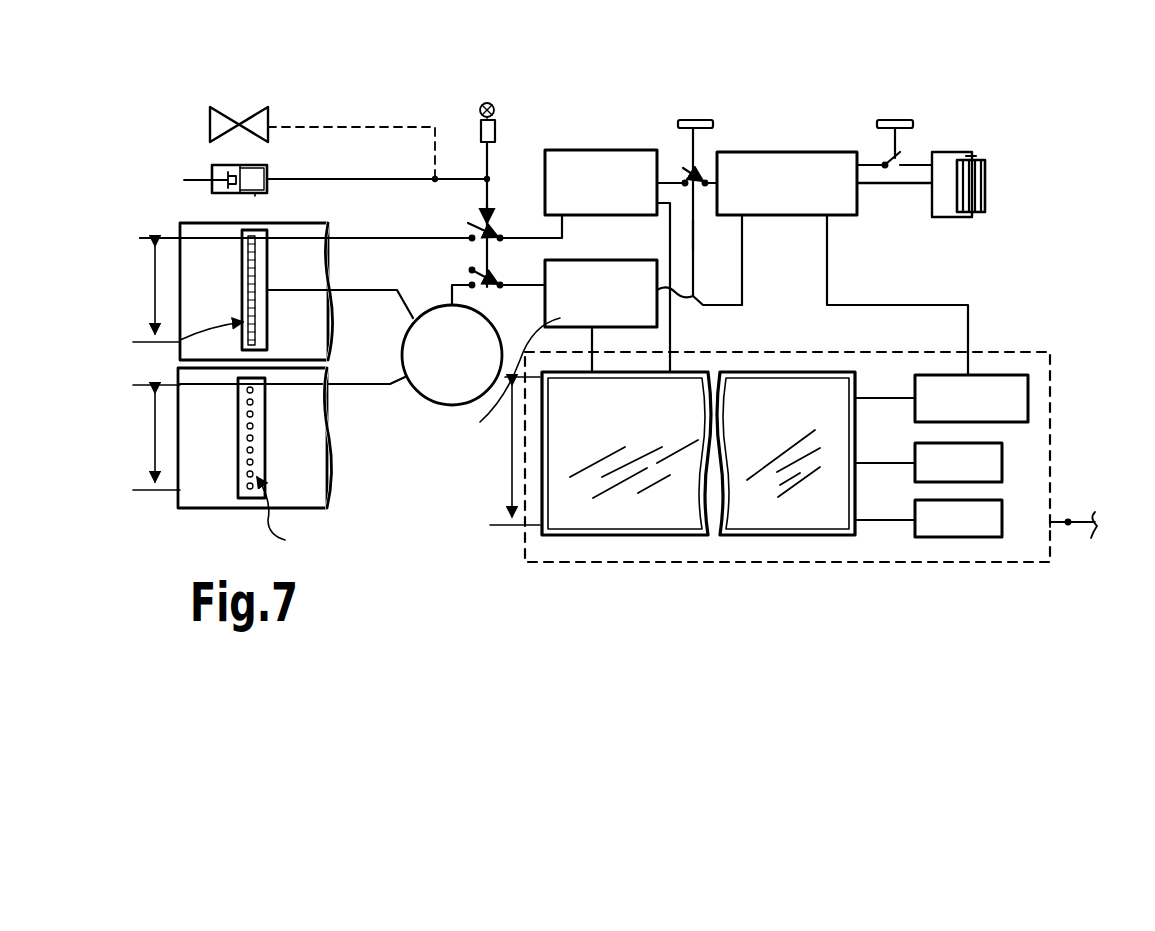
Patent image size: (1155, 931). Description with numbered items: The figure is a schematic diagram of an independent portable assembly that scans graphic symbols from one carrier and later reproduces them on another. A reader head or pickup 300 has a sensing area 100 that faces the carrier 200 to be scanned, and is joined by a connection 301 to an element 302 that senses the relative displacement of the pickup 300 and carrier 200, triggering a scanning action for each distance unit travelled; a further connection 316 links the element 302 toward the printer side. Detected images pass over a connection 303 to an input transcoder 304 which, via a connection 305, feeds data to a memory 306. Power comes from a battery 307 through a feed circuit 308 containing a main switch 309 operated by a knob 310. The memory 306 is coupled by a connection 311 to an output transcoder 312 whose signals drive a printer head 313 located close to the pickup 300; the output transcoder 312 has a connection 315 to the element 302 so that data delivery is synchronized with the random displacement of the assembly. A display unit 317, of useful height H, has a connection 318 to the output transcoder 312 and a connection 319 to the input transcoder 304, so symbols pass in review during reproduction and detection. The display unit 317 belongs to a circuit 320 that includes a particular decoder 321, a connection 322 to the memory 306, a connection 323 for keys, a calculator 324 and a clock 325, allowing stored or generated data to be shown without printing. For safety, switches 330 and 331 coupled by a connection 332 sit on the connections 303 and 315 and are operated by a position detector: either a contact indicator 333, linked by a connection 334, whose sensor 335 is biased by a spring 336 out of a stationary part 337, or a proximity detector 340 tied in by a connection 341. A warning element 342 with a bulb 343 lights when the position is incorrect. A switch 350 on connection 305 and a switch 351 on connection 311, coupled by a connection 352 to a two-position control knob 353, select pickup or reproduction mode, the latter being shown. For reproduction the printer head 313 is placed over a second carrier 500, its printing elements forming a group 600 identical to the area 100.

The area 100 is at (180, 340).
The carrier 200 is at (310, 262).
The pickup 300 is at (267, 242).
The connection 301 is at (404, 292).
The element 302 is at (428, 378).
The connection 303 is at (412, 233).
The input transcoder 304 is at (580, 164).
The connection 305 is at (664, 180).
The memory 306 is at (771, 174).
The battery 307 is at (993, 184).
The feed circuit 308 is at (862, 162).
The switch 309 is at (899, 172).
The knob 310 is at (900, 106).
The connection 311 is at (745, 302).
The output transcoder 312 is at (494, 375).
The printer head 313 is at (260, 454).
The connection 315 is at (528, 278).
The pipe 316 is at (406, 375).
The display unit 317 is at (567, 513).
The connection 318 is at (676, 316).
The connection 319 is at (680, 319).
The circuit 320 is at (992, 332).
The decoder 321 is at (1018, 388).
The connection 322 is at (842, 304).
The connection 323 is at (1068, 525).
The calculator 324 is at (988, 460).
The clock 325 is at (988, 516).
The switch 330 is at (492, 227).
The switch 331 is at (486, 274).
The connection 332 is at (476, 274).
The indicator 333 is at (260, 194).
The connection 334 is at (360, 165).
The sensor 335 is at (204, 182).
The spring 336 is at (232, 168).
The stationary part 337 is at (268, 172).
The proximity detector 340 is at (226, 118).
The dashed link 341 is at (360, 112).
The warning element 342 is at (495, 132).
The bulb 343 is at (481, 110).
The switch 350 is at (702, 172).
The switch 351 is at (704, 295).
The connection 352 is at (700, 233).
The control knob 353 is at (693, 118).
The carrier 500 is at (305, 495).
The group 600 is at (300, 519).